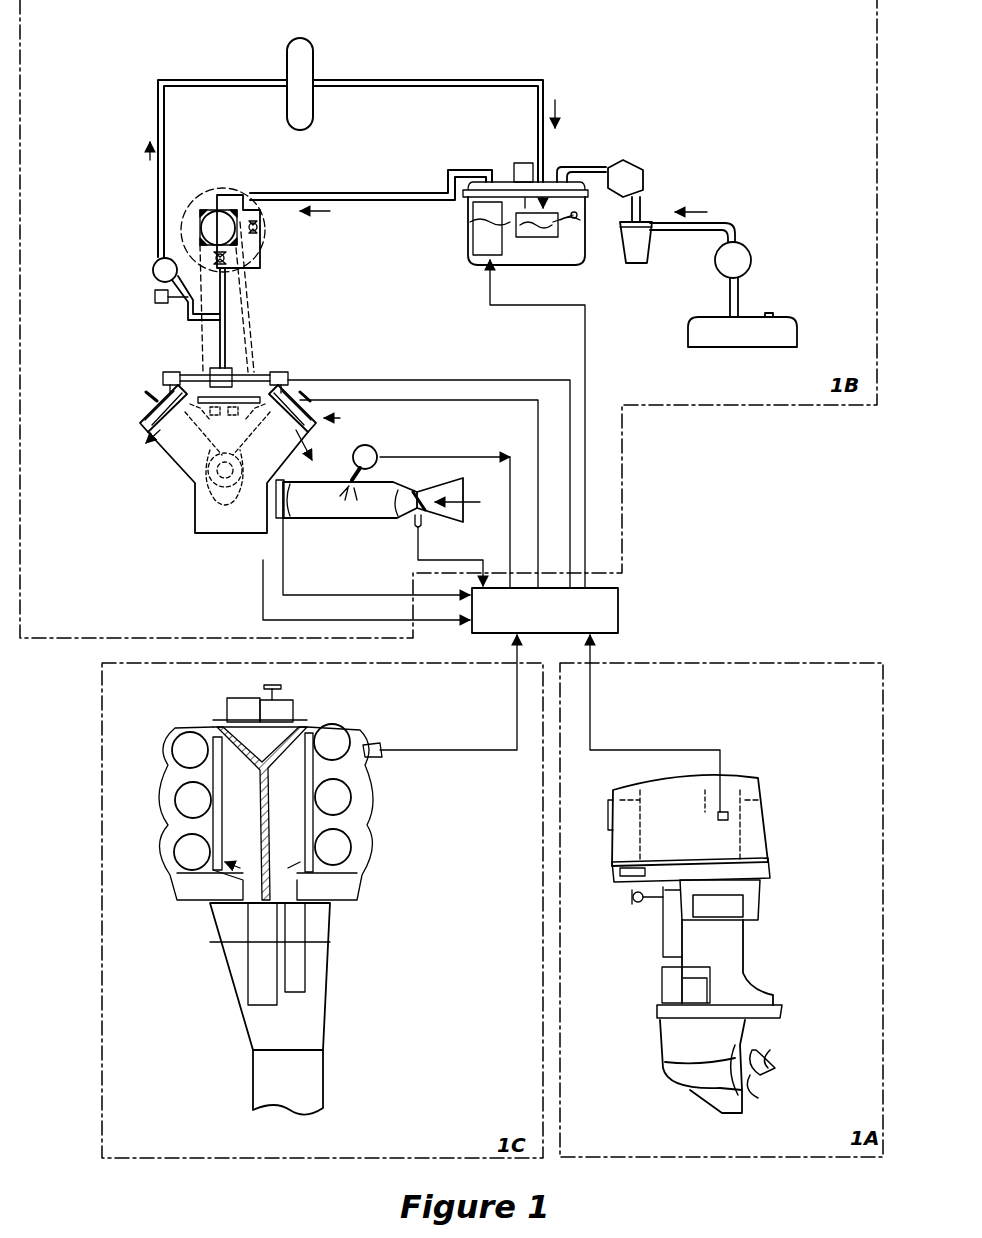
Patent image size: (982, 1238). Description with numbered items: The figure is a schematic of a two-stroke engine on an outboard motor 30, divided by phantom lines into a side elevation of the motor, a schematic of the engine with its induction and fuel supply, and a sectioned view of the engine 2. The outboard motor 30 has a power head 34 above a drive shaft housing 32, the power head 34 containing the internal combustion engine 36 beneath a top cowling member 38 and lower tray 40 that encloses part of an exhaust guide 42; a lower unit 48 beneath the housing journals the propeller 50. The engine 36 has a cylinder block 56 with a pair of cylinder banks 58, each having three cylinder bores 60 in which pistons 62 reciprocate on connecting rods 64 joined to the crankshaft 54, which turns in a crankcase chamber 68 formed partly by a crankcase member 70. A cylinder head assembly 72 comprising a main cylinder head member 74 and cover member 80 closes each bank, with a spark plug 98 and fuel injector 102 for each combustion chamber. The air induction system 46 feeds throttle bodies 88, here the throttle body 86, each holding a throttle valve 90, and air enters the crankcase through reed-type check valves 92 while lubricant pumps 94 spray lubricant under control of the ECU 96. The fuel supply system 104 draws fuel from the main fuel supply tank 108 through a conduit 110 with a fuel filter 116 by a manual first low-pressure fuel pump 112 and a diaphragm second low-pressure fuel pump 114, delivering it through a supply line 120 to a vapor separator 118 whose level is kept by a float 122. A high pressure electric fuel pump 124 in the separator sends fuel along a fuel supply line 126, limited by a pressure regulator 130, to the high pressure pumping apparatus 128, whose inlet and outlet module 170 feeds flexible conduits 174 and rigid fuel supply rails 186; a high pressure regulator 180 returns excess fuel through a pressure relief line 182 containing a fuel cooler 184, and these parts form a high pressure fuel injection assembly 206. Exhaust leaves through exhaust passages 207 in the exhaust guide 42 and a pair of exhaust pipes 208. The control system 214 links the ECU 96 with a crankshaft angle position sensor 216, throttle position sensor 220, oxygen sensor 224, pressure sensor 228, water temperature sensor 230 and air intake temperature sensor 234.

The engine 2 is at (250, 778).
The outboard motor 30 is at (748, 762).
The drive shaft housing 32 is at (330, 1035).
The power head 34 is at (760, 822).
The internal combustion engine 36 is at (385, 818).
The top cowling member 38 is at (632, 781).
The lower tray 40 is at (635, 897).
The exhaust guide 42 is at (330, 935).
The air induction system 46 is at (414, 478).
The lower unit 48 is at (662, 1048).
The propeller 50 is at (755, 1095).
The crankshaft 54 is at (232, 500).
The cylinder block 56 is at (372, 870).
The cylinder banks 58 is at (175, 445).
The cylinder bores 60 is at (200, 759).
The pistons 62 is at (180, 462).
The connecting rods 64 is at (205, 470).
The crankcase chamber 68 is at (200, 525).
The crankcase member 70 is at (215, 523).
The cylinder head assembly 72 is at (321, 408).
The main cylinder head member 74 is at (150, 428).
The cylinder head cover member 80 is at (140, 410).
The throttle body 86 is at (455, 482).
The throttle bodies 88 is at (376, 556).
The throttle valve 90 is at (380, 510).
The reed-type check valves 92 is at (300, 505).
The lubricant pumps 94 is at (372, 448).
The ECU 96 is at (620, 610).
The spark plug 98 is at (143, 398).
The fuel injector 102 is at (163, 378).
The fuel supply system 104 is at (588, 85).
The main fuel supply tank 108 is at (745, 345).
The conduit 110 is at (740, 300).
The first low-pressure fuel pump 112 is at (745, 245).
The second low-pressure fuel pump 114 is at (645, 180).
The fuel filter 116 is at (645, 250).
The vapor separator 118 is at (582, 240).
The supply line 120 is at (585, 165).
The float 122 is at (545, 235).
The high pressure electric fuel pump 124 is at (498, 250).
The fuel supply line 126 is at (328, 193).
The high pressure pumping apparatus 128 is at (210, 190).
The pressure regulator 130 is at (522, 163).
The inlet and outlet module 170 is at (245, 300).
The flexible conduits 174 is at (258, 345).
The high pressure regulator 180 is at (155, 270).
The pressure relief line 182 is at (440, 80).
The fuel cooler 184 is at (305, 58).
The fuel supply rails 186 is at (300, 372).
The high pressure fuel injection assembly 206 is at (250, 812).
The exhaust passages 207 is at (262, 935).
The exhaust pipes 208 is at (248, 975).
The control system 214 is at (658, 577).
The crankshaft angle position sensor 216 is at (255, 560).
The throttle position sensor 220 is at (425, 522).
The oxygen sensor 224 is at (380, 745).
The pressure sensor 228 is at (155, 297).
The water temperature sensor 230 is at (735, 808).
The air intake temperature sensor 234 is at (285, 530).